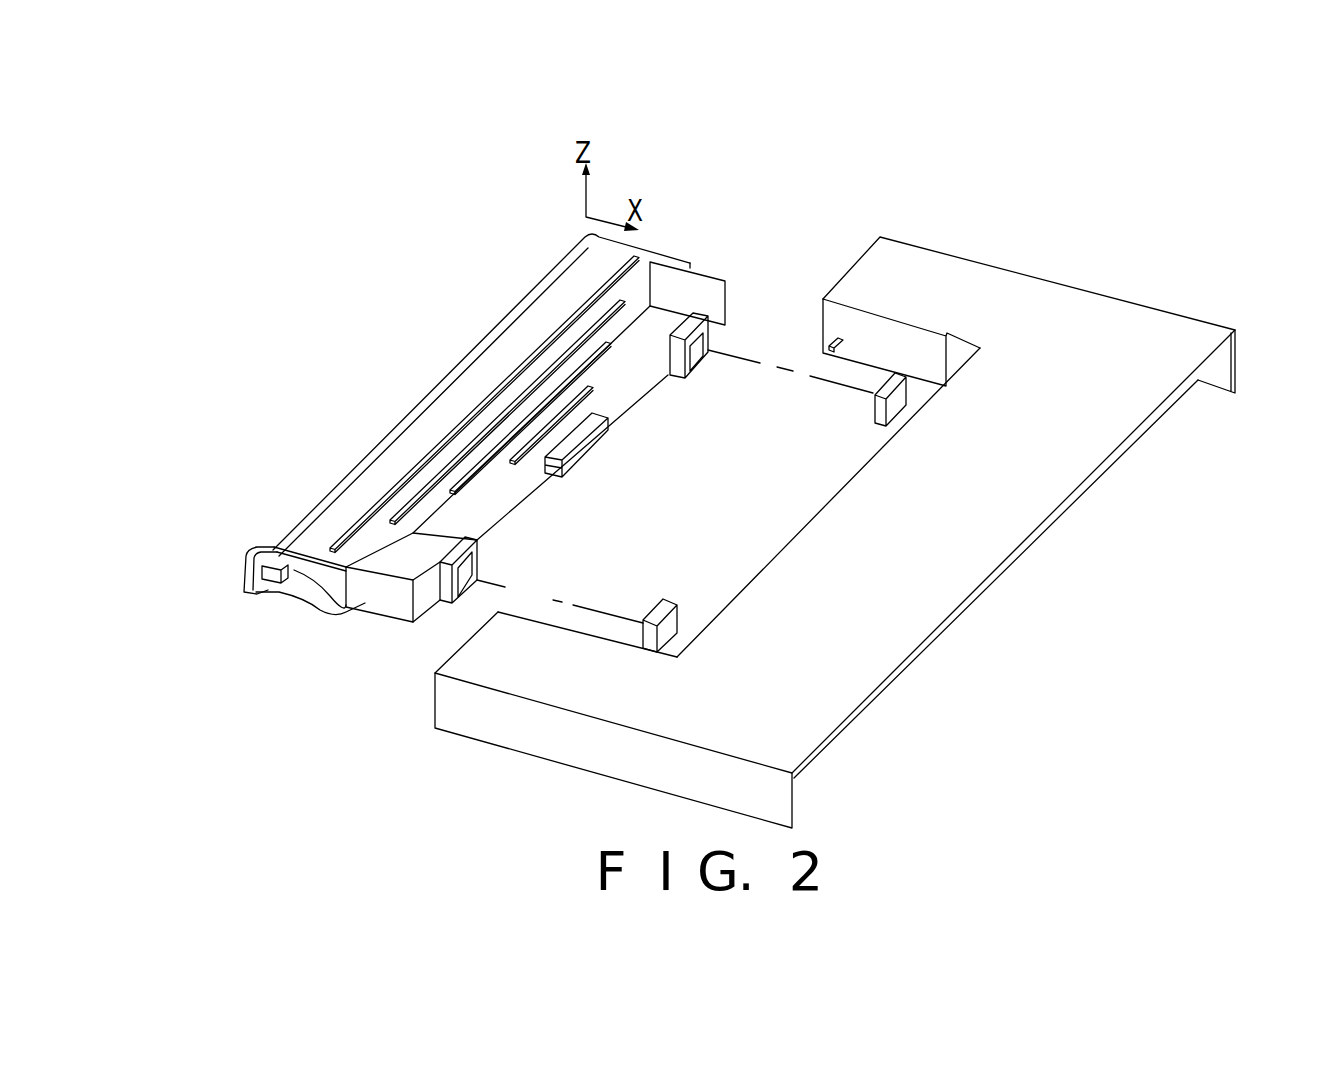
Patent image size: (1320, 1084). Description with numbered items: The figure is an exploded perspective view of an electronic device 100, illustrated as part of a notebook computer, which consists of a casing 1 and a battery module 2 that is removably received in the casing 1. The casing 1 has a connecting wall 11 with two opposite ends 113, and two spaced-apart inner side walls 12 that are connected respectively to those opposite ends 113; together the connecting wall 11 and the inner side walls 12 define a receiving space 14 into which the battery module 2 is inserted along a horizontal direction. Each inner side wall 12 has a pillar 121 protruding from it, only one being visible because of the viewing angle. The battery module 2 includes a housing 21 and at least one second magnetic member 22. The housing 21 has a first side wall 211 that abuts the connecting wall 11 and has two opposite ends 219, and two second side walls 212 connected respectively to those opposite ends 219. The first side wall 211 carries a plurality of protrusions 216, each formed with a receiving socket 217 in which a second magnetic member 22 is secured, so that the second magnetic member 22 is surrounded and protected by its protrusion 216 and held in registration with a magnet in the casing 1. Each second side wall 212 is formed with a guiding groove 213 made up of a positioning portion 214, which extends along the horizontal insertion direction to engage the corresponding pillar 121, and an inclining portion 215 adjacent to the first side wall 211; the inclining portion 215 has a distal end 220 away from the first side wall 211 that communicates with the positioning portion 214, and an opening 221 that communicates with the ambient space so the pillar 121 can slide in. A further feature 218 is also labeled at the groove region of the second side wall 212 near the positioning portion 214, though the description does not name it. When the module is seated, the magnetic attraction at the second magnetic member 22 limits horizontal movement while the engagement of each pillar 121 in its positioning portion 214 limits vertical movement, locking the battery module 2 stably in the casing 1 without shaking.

The electronic device 100 is at (1050, 237).
The casing 1 is at (882, 722).
The connecting wall 11 is at (848, 485).
The inner side walls 12 is at (912, 340).
The opposite ends 113 is at (960, 373).
The receiving space 14 is at (802, 355).
The pillar 121 is at (833, 340).
The second magnetic member 22 is at (877, 407).
The battery module 2 is at (408, 372).
The housing 21 is at (327, 522).
The first side wall 211 is at (532, 507).
The second side walls 212 is at (642, 253).
The guiding groove 213 is at (295, 568).
The positioning portion 214 is at (262, 567).
The inclining portion 215 is at (335, 592).
The protrusions 216 is at (693, 318).
The receiving socket 217 is at (692, 363).
The hook tip 218 is at (283, 587).
The opposite ends 219 is at (716, 307).
The distal end 220 is at (288, 553).
The opening 221 is at (344, 610).